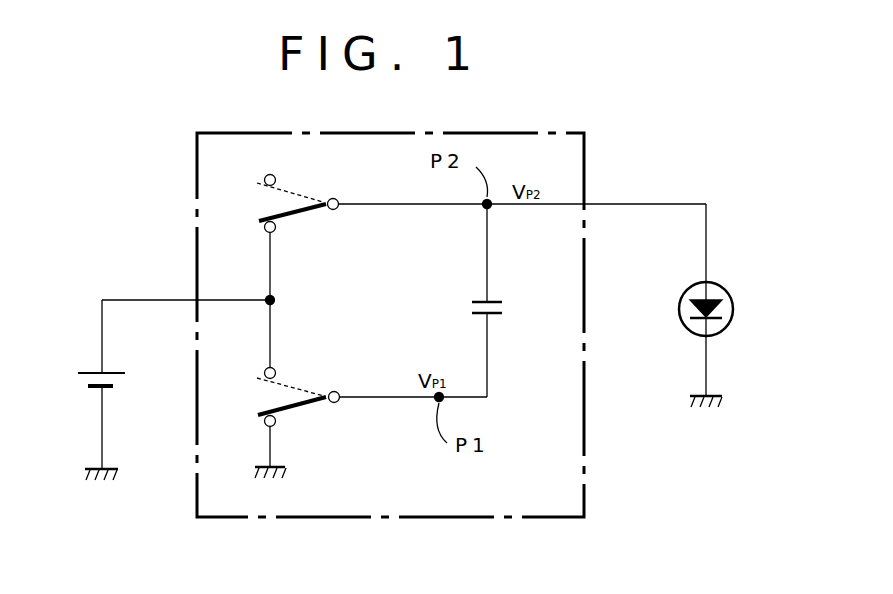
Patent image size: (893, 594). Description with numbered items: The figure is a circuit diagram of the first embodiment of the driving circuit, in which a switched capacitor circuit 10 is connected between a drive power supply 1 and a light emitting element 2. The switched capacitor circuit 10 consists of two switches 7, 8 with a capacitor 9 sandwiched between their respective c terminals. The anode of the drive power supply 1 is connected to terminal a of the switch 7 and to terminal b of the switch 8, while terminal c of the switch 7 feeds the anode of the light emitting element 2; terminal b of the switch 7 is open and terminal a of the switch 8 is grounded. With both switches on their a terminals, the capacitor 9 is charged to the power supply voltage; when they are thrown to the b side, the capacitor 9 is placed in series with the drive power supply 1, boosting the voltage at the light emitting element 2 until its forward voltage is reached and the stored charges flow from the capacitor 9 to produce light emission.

The drive power supply 1 is at (80, 386).
The light emitting element 2 is at (733, 313).
The switch 7 is at (307, 187).
The switch 8 is at (300, 380).
The capacitor 9 is at (492, 288).
The switched capacitor circuit 10 is at (584, 180).